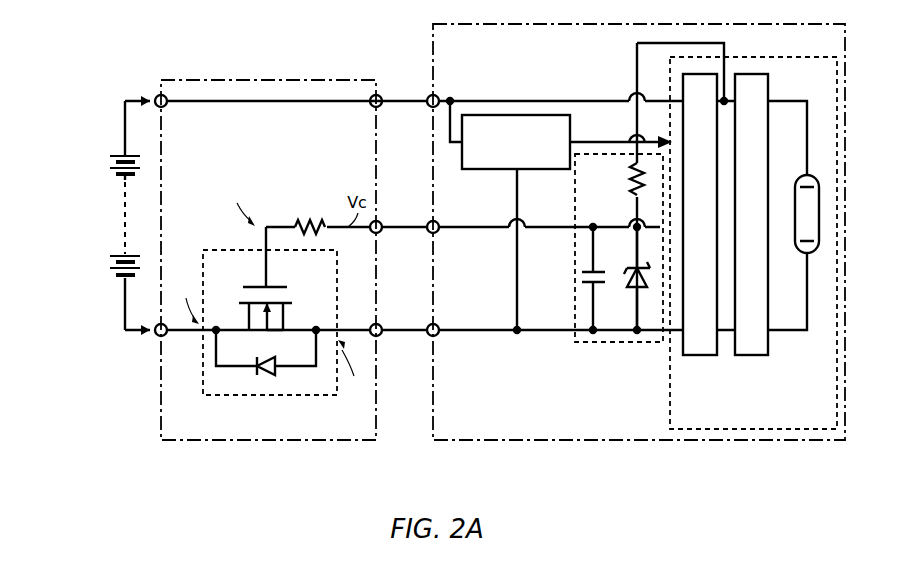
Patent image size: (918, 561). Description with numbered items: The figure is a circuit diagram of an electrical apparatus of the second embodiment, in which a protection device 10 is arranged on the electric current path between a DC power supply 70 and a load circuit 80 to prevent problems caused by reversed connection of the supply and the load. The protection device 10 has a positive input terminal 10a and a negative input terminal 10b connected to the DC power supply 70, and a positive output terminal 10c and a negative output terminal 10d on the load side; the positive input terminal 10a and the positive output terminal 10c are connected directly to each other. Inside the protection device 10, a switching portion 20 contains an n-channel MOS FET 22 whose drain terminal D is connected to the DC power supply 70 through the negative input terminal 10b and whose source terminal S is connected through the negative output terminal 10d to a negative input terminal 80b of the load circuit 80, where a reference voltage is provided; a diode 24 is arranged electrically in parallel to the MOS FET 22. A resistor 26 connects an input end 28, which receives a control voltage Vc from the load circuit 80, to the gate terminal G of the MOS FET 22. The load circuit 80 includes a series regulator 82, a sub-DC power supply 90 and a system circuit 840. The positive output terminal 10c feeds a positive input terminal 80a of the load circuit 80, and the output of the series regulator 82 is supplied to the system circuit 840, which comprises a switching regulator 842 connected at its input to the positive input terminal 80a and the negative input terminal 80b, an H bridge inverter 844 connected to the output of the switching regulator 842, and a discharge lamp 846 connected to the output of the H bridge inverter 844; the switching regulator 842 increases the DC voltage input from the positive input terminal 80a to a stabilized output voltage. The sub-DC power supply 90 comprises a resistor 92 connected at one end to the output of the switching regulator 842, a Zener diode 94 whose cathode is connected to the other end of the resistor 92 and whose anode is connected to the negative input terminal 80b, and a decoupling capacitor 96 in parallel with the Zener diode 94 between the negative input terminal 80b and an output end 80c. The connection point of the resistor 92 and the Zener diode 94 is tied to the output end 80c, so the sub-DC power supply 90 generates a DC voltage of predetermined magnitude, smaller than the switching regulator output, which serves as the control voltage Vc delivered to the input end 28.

The protection device 10 is at (206, 441).
The positive input terminal 10a is at (161, 92).
The negative input terminal 10b is at (156, 336).
The positive output terminal 10c is at (380, 108).
The negative output terminal 10d is at (380, 337).
The switching portion 20 is at (203, 250).
The n-channel type MOS FET 22 is at (246, 287).
The diode 24 is at (275, 368).
The resistor 26 is at (311, 218).
The input end 28 is at (380, 234).
The DC power supply 70 is at (122, 218).
The load circuit 80 is at (478, 441).
The positive input terminal 80a is at (428, 96).
The negative input terminal 80b is at (428, 325).
The output end 80c is at (428, 222).
The series regulator 82 is at (482, 170).
The sub-DC power supply 90 is at (620, 344).
The resistor 92 is at (623, 184).
The Zener diode 94 is at (626, 270).
The decoupling capacitor 96 is at (597, 286).
The system circuit 840 is at (670, 418).
The switching regulator 842 is at (700, 356).
The H bridge inverter 844 is at (752, 356).
The discharge lamp 846 is at (797, 176).